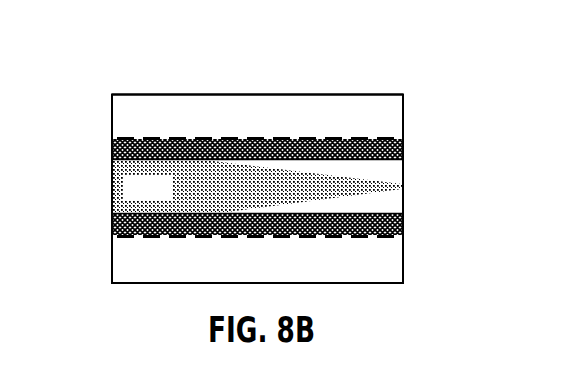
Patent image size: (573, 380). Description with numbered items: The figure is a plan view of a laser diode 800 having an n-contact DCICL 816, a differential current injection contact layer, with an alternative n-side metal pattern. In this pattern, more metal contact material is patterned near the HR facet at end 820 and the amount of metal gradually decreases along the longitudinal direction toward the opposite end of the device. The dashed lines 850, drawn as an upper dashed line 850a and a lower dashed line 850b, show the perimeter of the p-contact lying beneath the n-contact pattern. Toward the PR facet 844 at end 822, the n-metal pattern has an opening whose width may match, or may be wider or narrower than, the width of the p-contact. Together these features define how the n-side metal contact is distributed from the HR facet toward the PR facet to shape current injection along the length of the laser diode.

The laser diode 800 is at (226, 94).
The n-contact DCICL 816 is at (112, 236).
The end 820 is at (98, 150).
The end 822 is at (422, 135).
The PR facet 844 is at (413, 180).
The dashed lines 850 is at (168, 199).
The dashed line 850a is at (320, 140).
The dashed line 850b is at (332, 237).